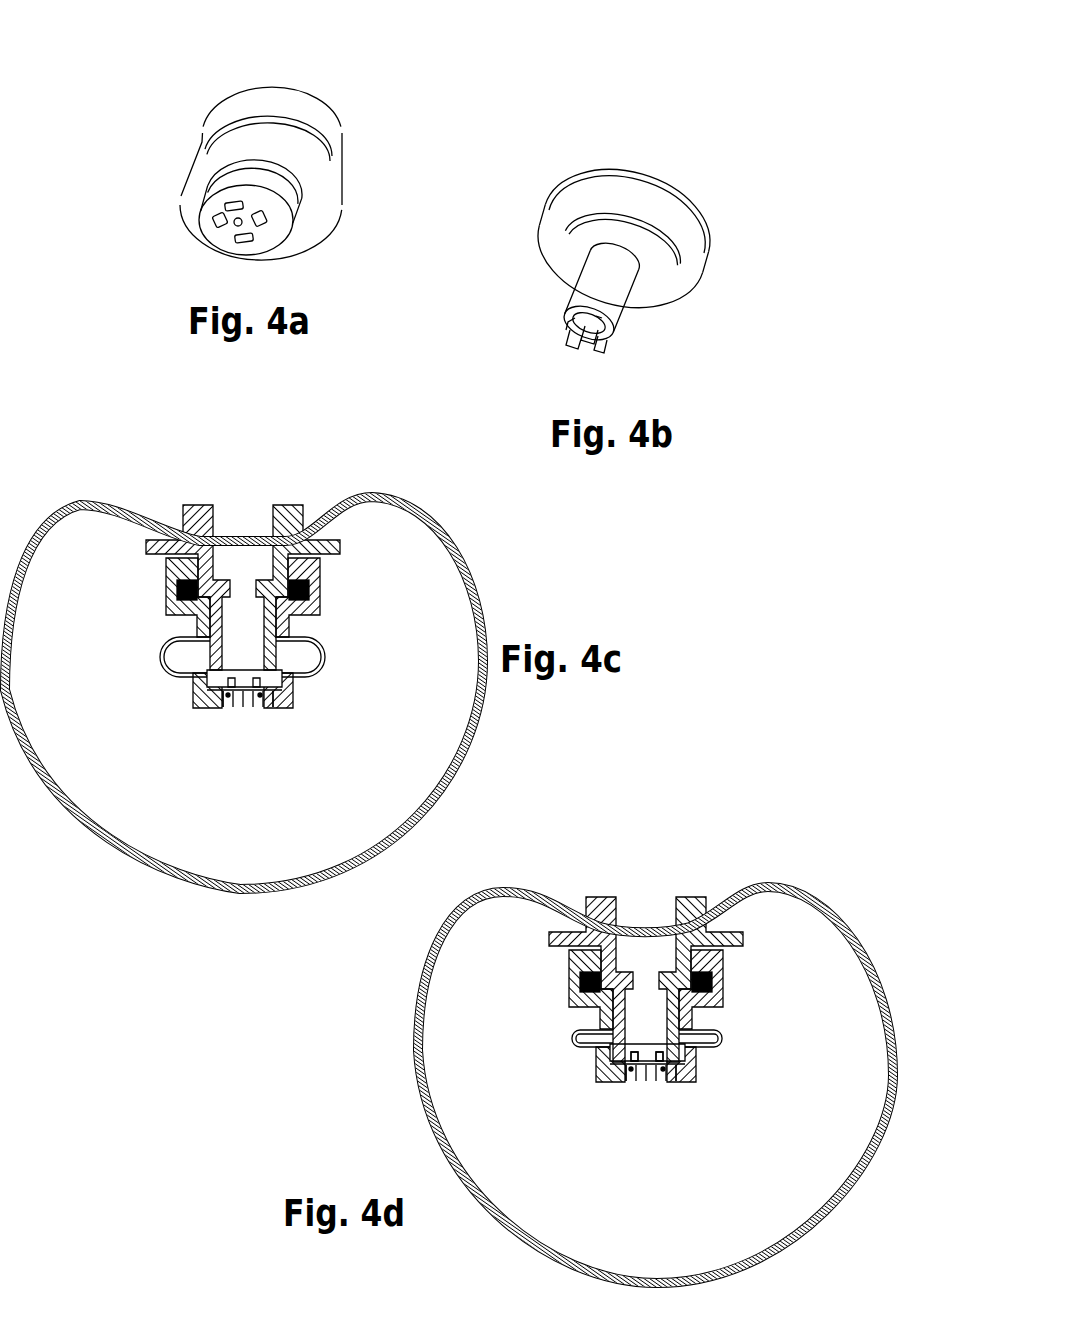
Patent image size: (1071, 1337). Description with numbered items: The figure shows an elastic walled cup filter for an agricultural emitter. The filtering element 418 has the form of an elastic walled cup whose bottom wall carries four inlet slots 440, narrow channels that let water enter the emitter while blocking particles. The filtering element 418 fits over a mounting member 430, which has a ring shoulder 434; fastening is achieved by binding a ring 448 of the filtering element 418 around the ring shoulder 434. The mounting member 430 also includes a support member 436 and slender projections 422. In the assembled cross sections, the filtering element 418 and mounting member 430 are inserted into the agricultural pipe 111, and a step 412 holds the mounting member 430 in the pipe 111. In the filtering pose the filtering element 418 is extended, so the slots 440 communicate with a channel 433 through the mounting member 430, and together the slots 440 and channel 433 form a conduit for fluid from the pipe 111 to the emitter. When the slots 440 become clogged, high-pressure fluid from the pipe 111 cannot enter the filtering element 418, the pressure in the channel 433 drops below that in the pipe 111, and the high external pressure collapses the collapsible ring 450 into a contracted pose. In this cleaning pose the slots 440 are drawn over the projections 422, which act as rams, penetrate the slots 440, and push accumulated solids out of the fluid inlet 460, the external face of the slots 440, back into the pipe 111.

In FIG. 4C, the agricultural pipe 111 is at (178, 884).
In FIG. 4D, the agricultural pipe 111 is at (420, 1095).
In FIG. 4B, the step 412 is at (556, 192).
In FIG. 4A, the filtering element 418 is at (248, 171).
In FIG. 4C, the filtering element 418 is at (244, 670).
In FIG. 4D, the filtering element 418 is at (675, 1057).
In FIG. 4B, the projections 422 is at (577, 345).
In FIG. 4D, the projections 422 is at (593, 1092).
In FIG. 4B, the mounting member 430 is at (595, 263).
In FIG. 4C, the mounting member 430 is at (225, 555).
In FIG. 4D, the mounting member 430 is at (626, 949).
In FIG. 4C, the channel 433 is at (272, 521).
In FIG. 4B, the ring shoulder 434 is at (560, 248).
In FIG. 4B, the support member 436 is at (572, 290).
In FIG. 4A, the inlet slots 440 is at (217, 223).
In FIG. 4C, the inlet slots 440 is at (232, 715).
In FIG. 4A, the ring 448 is at (224, 116).
In FIG. 4C, the ring 448 is at (186, 598).
In FIG. 4C, the collapsible ring 450 is at (189, 666).
In FIG. 4D, the collapsible ring 450 is at (592, 1051).
In FIG. 4A, the fluid inlet 460 is at (240, 243).
In FIG. 4C, the fluid inlet 460 is at (227, 737).
In FIG. 4D, the fluid inlet 460 is at (620, 1115).